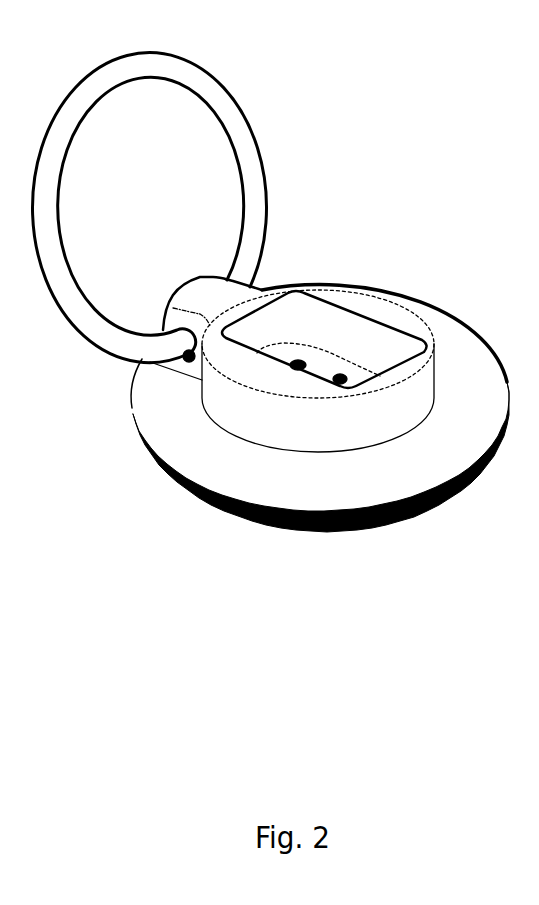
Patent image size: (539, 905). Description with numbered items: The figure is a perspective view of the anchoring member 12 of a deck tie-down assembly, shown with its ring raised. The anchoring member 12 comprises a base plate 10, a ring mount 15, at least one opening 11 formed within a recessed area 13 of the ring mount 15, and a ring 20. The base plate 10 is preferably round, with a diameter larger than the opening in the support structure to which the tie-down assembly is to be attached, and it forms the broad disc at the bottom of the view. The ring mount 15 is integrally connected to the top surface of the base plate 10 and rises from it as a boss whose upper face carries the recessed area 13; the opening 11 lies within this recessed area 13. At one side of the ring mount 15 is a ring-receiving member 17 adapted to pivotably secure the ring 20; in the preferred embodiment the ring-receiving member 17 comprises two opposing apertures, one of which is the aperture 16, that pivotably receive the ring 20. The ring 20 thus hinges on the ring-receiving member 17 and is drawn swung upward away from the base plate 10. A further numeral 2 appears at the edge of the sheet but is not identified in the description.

The magnetic holder assembly 2 is at (531, 567).
The base plate 10 is at (228, 468).
The opening 11 is at (342, 383).
The anchoring member 12 is at (307, 597).
The recessed area 13 is at (380, 350).
The ring mount 15 is at (380, 302).
The aperture 16 is at (183, 357).
The ring-receiving member 17 is at (263, 288).
The ring 20 is at (227, 108).